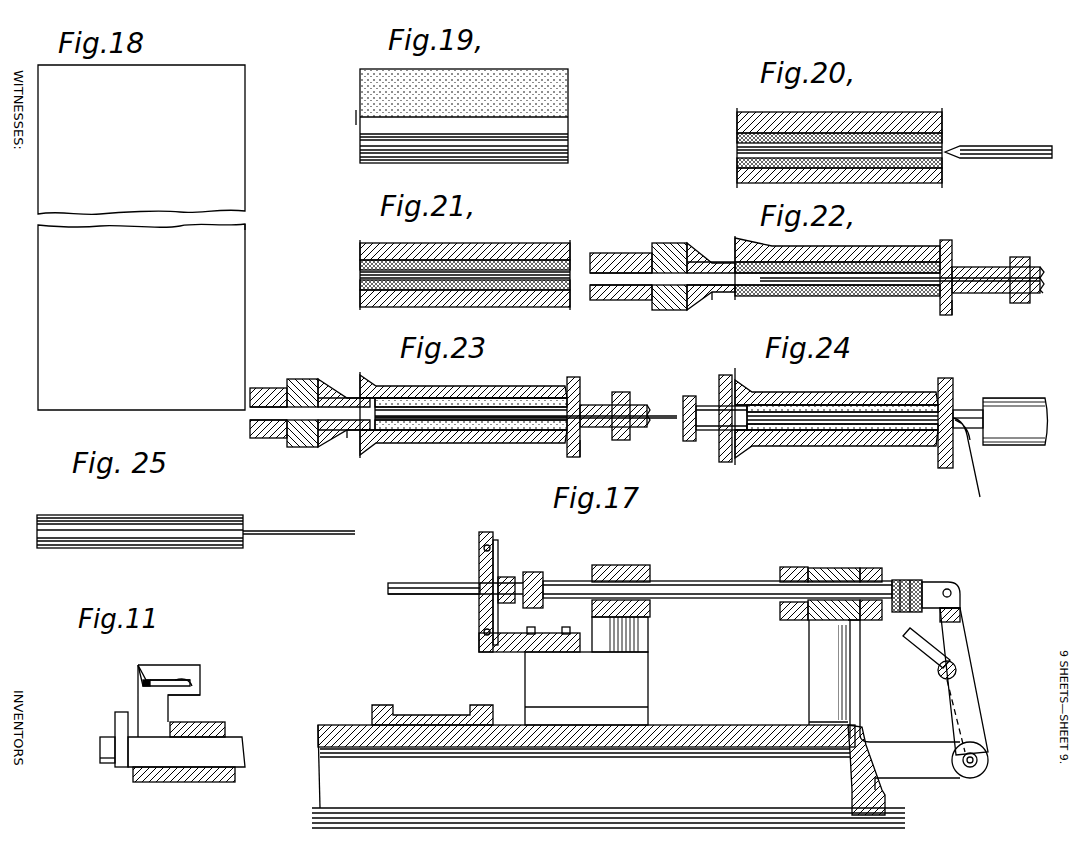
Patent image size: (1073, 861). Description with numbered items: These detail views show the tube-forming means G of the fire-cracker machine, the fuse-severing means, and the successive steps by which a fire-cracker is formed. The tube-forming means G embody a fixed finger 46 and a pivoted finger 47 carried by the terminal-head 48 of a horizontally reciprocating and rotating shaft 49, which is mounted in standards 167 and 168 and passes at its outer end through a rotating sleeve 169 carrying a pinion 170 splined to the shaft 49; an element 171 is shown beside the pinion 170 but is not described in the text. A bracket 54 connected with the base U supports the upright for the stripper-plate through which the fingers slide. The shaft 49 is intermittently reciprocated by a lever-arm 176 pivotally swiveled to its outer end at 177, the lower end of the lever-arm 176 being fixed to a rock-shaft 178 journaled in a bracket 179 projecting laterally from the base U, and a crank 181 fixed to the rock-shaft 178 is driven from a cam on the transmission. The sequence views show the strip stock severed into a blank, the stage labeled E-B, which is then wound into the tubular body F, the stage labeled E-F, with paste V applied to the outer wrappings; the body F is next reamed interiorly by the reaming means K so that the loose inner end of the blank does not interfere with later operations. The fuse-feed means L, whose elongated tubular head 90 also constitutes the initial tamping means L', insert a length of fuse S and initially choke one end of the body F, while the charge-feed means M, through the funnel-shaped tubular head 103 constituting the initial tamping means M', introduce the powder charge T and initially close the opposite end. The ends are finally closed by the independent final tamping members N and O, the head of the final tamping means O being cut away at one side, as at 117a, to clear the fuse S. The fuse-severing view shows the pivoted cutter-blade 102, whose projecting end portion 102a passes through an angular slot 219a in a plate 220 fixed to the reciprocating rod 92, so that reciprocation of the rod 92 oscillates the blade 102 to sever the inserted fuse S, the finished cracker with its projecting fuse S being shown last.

In FIG. 18, the blank of stock E-B is at (260, 235).
In FIG. 19, the blank formed into tubular body E-F is at (328, 119).
In FIG. 19, the paste V is at (563, 84).
In FIG. 21, the tubular fire-cracker body F is at (452, 275).
In FIG. 20, the tubular fire-cracker body F is at (823, 148).
In FIG. 20, the reaming means K is at (998, 141).
In FIG. 22, the charge-feed means M is at (669, 268).
In FIG. 23, the charge-feed means M is at (302, 403).
In FIG. 22, the funnel-shaped tubular reciprocating head 103 is at (688, 258).
In FIG. 23, the funnel-shaped tubular reciprocating head 103 is at (335, 392).
In FIG. 22, the initial tamping means M' is at (708, 308).
In FIG. 23, the initial tamping means M' is at (327, 449).
In FIG. 22, the fuse S is at (902, 282).
In FIG. 23, the fuse S is at (656, 410).
In FIG. 24, the fuse S is at (980, 462).
In FIG. 25, the fuse S is at (295, 530).
In FIG. 22, the fuse-feed means L is at (965, 277).
In FIG. 23, the fuse-feed means L is at (583, 413).
In FIG. 22, the initial tamping means L' is at (958, 321).
In FIG. 23, the initial tamping means L' is at (590, 454).
In FIG. 22, the elongated tubular reciprocating head 90 is at (1006, 295).
In FIG. 23, the powder T is at (432, 400).
In FIG. 24, the powder T is at (800, 402).
In FIG. 24, the final tamping member N is at (715, 405).
In FIG. 24, the final tamping means O is at (952, 420).
In FIG. 24, the cut-away portion 117a is at (1015, 409).
In FIG. 11, the projecting end portion 102a is at (143, 668).
In FIG. 11, the pivoted cutter-blade 102 is at (152, 680).
In FIG. 11, the angular slot 219a is at (185, 682).
In FIG. 11, the plate 220 is at (195, 680).
In FIG. 11, the reciprocating rod 92 is at (235, 752).
In FIG. 17, the fixed finger 46 is at (415, 582).
In FIG. 17, the pivoted finger 47 is at (446, 596).
In FIG. 17, the horizontally reciprocating and rotating shaft 49 is at (484, 548).
In FIG. 17, the tube-forming means G is at (529, 592).
In FIG. 17, the terminal-head 48 is at (542, 580).
In FIG. 17, the standard 167 is at (640, 582).
In FIG. 17, the bracket 54 is at (505, 654).
In FIG. 17, the collar 171 is at (782, 572).
In FIG. 17, the pinion 170 is at (806, 572).
In FIG. 17, the rotating sleeve 169 is at (850, 580).
In FIG. 17, the pivotal swivel connection 177 is at (927, 588).
In FIG. 17, the lever-arm 176 is at (960, 640).
In FIG. 17, the standard 168 is at (905, 640).
In FIG. 17, the crank 181 is at (952, 705).
In FIG. 17, the bracket 179 is at (920, 775).
In FIG. 17, the rock-shaft 178 is at (976, 766).
In FIG. 17, the base U is at (608, 766).